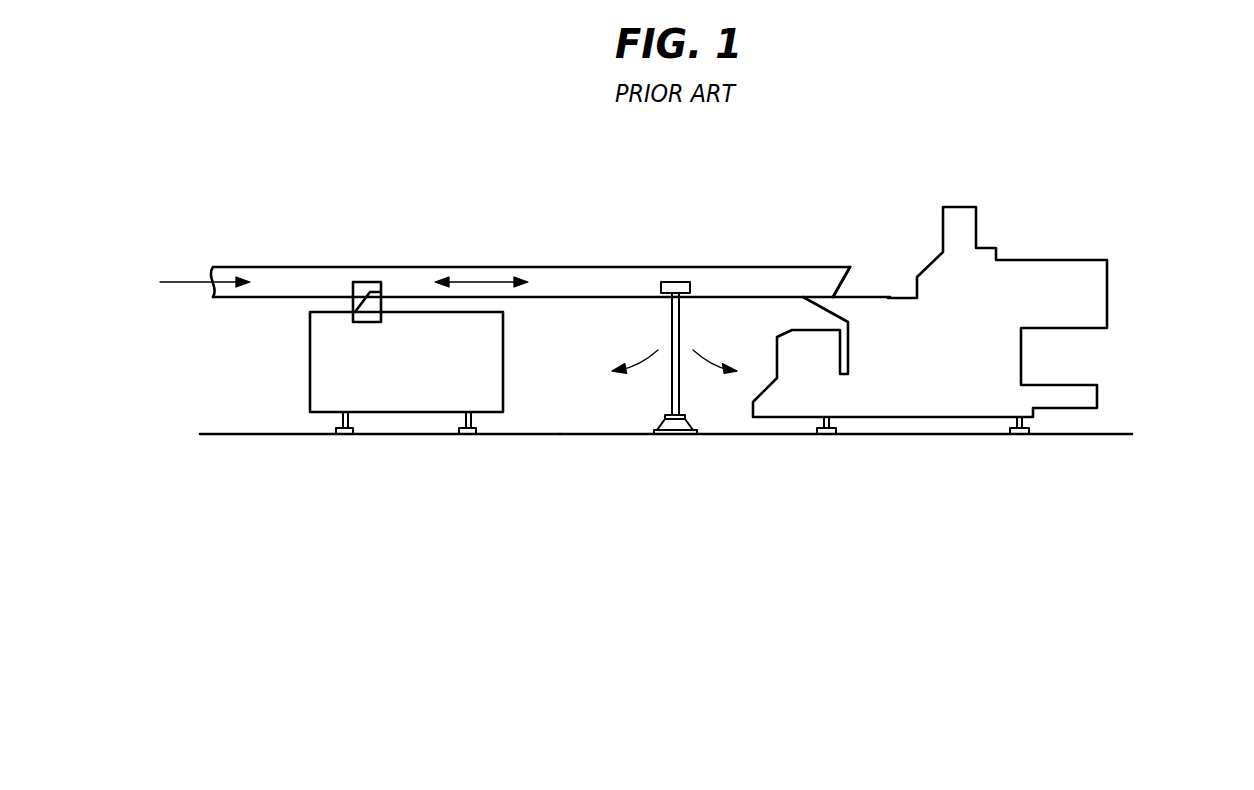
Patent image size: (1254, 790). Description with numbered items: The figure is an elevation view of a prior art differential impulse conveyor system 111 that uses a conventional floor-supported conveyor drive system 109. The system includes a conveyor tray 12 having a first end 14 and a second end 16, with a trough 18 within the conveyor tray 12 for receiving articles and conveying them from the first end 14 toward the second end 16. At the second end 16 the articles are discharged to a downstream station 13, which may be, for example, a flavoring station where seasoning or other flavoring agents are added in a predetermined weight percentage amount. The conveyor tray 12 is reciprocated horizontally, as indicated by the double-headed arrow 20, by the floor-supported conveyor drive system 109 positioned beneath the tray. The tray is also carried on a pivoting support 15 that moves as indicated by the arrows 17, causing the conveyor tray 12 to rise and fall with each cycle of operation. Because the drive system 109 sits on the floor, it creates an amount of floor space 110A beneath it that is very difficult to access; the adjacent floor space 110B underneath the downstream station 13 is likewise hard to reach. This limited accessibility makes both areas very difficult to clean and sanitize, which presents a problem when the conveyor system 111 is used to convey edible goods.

The conveyor tray 12 is at (583, 267).
The first end 14 is at (270, 267).
The trough 18 is at (387, 233).
The double-headed arrow 20 is at (477, 281).
The second end 16 is at (853, 244).
The floor-supported conveyor drive system 109 is at (428, 376).
The floor space 110A is at (397, 423).
The adjacent floor space 110B is at (940, 423).
The pivoting support 15 is at (670, 383).
The arrows 17 is at (647, 352).
The downstream station 13 is at (948, 378).
The differential impulse conveyor system 111 is at (1087, 198).